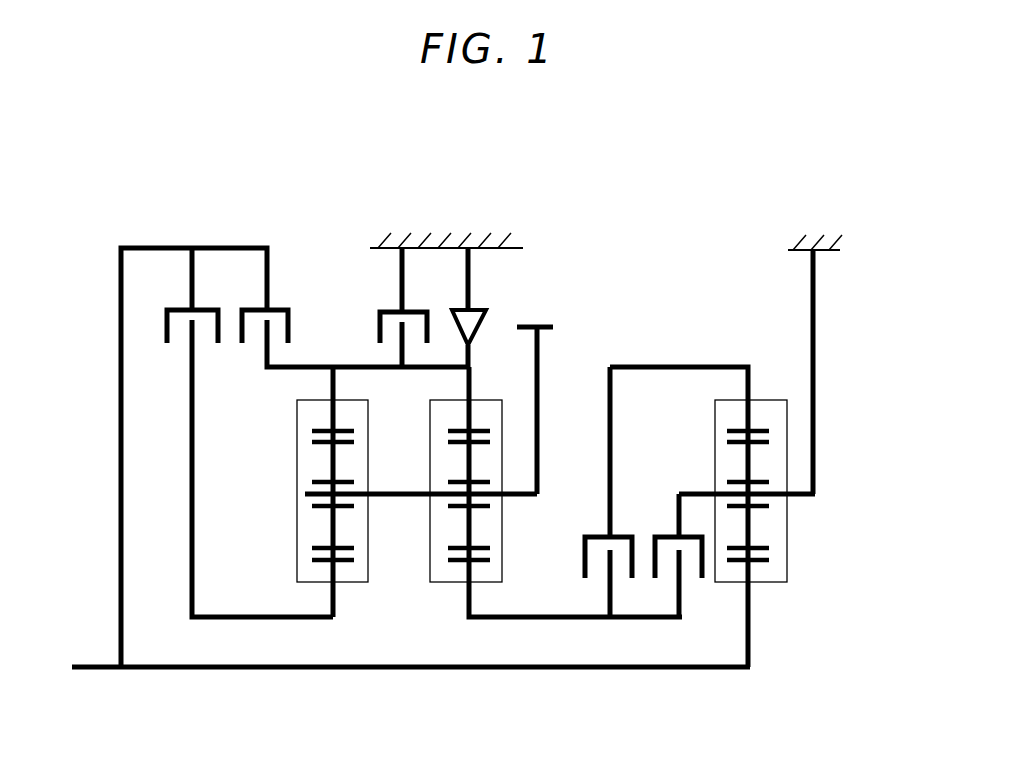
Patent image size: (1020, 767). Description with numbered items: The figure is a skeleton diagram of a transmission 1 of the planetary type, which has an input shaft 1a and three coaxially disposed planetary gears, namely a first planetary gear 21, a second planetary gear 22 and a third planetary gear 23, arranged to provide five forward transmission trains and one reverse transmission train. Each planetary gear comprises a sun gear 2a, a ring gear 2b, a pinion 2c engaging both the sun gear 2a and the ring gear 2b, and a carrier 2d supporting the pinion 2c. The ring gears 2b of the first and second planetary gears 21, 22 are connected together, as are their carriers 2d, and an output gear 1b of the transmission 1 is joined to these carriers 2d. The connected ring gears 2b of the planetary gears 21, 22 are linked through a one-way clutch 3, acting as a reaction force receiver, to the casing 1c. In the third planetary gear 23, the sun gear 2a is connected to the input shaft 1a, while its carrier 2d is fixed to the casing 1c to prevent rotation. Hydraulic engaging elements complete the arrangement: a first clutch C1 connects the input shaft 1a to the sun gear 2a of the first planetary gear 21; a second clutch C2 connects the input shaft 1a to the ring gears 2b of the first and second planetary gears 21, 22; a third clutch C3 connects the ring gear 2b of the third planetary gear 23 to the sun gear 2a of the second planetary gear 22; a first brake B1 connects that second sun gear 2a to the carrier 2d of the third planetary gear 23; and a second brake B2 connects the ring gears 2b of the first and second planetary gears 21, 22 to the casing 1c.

The transmission 1 is at (123, 240).
The input shaft 1a is at (160, 672).
The output gear 1b is at (550, 327).
The casing 1c is at (477, 237).
The sun gear 2a is at (323, 562).
The ring gear 2b is at (325, 428).
The pinion 2c is at (325, 520).
The carrier 2d is at (388, 492).
The first planetary gear 21 is at (368, 563).
The second planetary gear 22 is at (505, 557).
The third planetary gear 23 is at (787, 403).
The one-way clutch 3 is at (478, 322).
The first brake B1 is at (665, 533).
The second brake B2 is at (378, 330).
The first clutch C1 is at (166, 326).
The second clutch C2 is at (288, 325).
The third clutch C3 is at (593, 533).